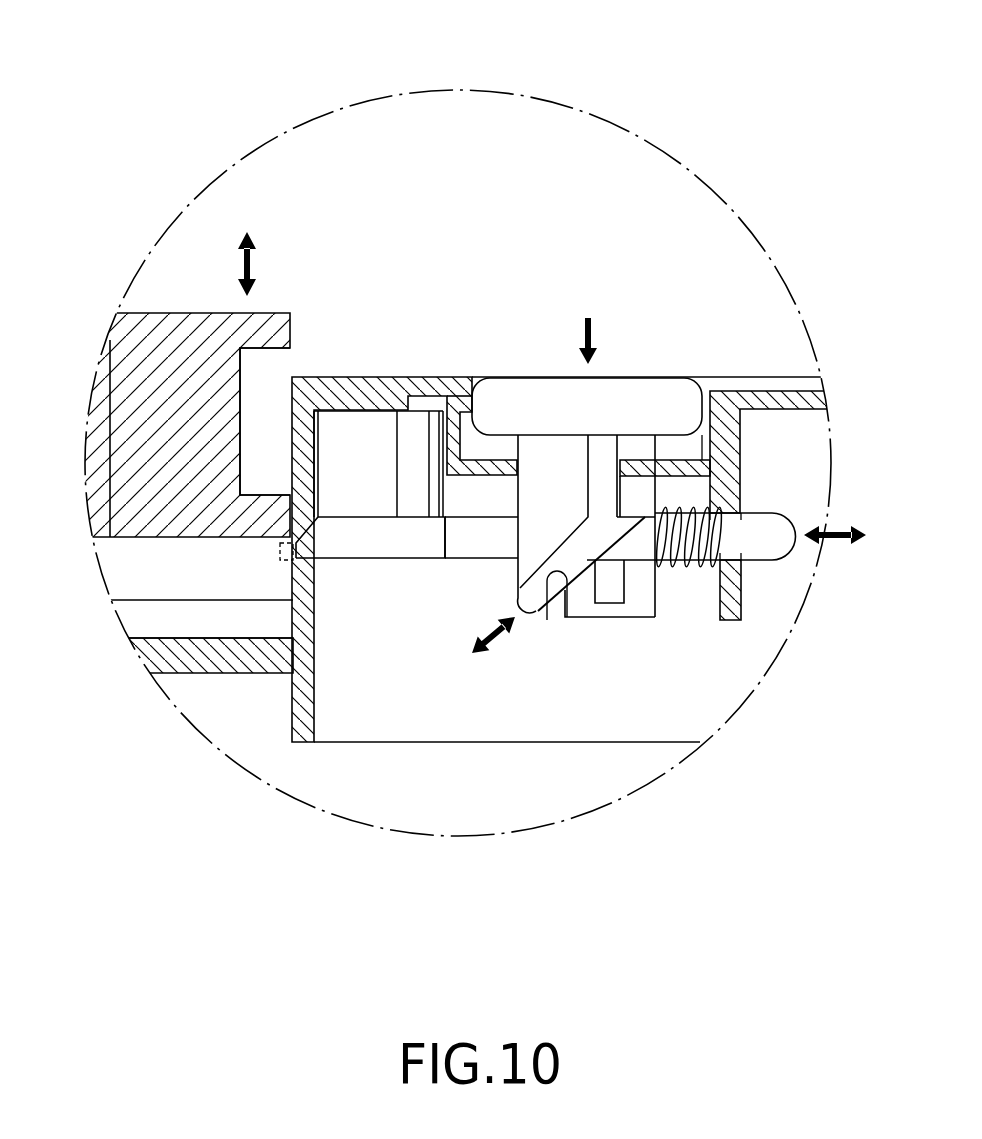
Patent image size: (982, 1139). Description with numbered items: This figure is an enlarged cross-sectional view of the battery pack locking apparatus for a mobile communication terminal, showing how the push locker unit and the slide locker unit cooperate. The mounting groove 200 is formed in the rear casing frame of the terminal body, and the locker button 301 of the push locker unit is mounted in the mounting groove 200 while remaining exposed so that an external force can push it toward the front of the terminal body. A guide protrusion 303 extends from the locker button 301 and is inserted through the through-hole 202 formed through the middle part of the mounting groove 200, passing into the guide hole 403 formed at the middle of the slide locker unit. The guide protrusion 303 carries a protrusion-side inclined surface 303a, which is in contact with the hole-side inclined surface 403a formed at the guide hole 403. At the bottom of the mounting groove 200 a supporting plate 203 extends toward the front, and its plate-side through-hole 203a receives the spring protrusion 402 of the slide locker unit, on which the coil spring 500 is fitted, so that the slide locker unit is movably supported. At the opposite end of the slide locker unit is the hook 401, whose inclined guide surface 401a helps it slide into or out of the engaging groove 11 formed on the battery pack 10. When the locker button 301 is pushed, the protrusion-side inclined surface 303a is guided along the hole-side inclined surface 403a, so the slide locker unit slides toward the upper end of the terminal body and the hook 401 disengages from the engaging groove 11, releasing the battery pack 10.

The battery pack 10 is at (142, 342).
The engaging groove 11 is at (250, 420).
The mounting groove 200 is at (463, 407).
The through-hole 202 is at (633, 440).
The supporting plate 203 is at (742, 620).
The plate-side through-hole 203a is at (745, 560).
The locker button 301 is at (653, 382).
The guide protrusion 303 is at (548, 457).
The protrusion-side inclined surface 303a is at (547, 620).
The hook 401 is at (368, 550).
The guide surface 401a is at (293, 563).
The spring protrusion 402 is at (772, 516).
The guide hole 403 is at (466, 552).
The hole-side inclined surface 403a is at (627, 522).
The coil spring 500 is at (713, 560).